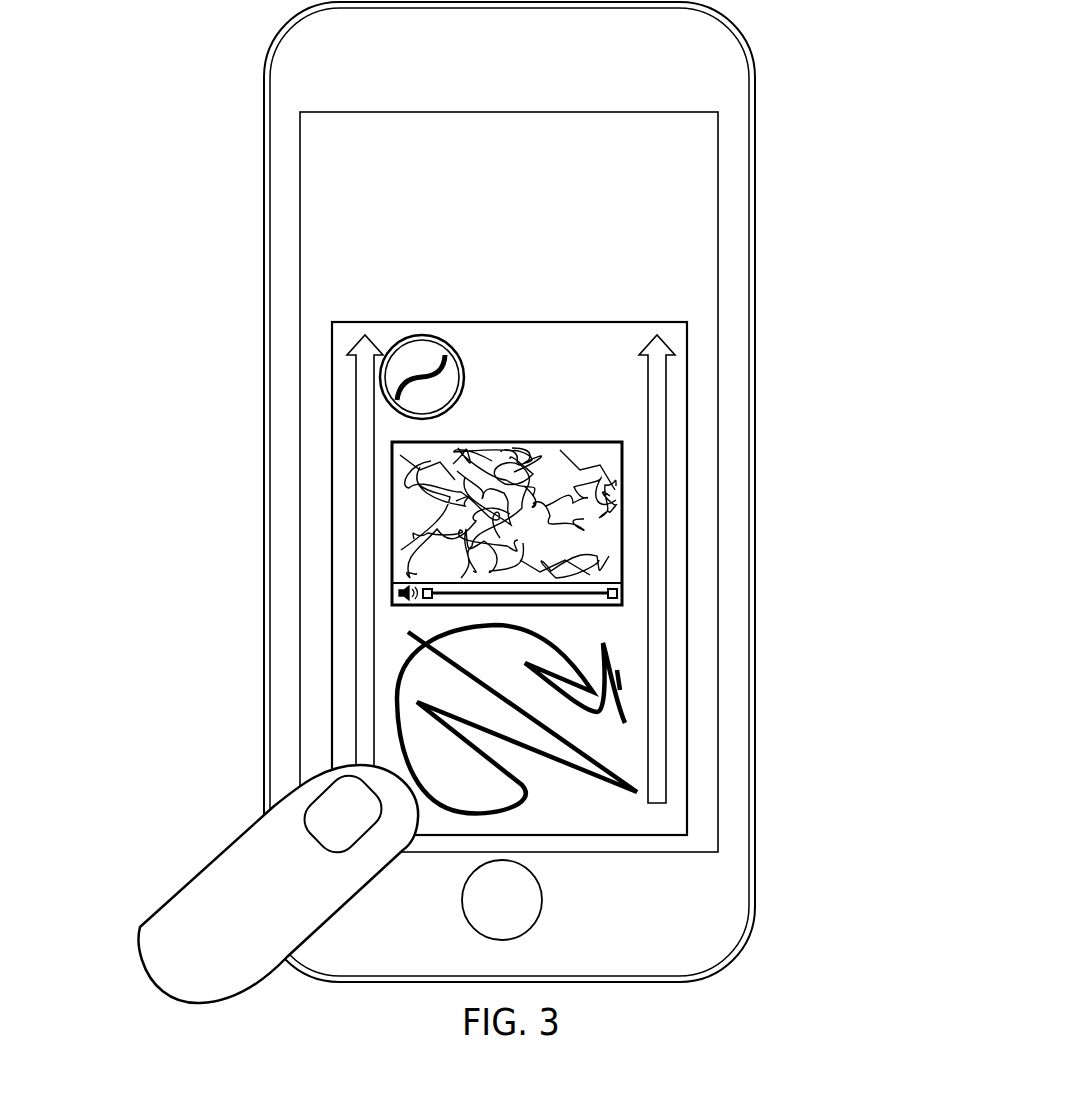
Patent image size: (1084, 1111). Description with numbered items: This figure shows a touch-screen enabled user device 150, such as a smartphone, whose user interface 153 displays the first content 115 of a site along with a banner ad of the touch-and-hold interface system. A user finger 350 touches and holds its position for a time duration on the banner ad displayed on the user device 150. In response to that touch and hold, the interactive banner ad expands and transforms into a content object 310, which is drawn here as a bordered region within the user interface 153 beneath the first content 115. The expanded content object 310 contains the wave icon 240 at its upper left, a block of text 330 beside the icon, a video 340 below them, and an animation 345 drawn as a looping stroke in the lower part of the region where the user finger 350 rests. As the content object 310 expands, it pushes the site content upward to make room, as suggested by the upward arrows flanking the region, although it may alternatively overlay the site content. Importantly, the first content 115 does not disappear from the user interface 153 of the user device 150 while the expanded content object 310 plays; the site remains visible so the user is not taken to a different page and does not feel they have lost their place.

The first content 115 is at (340, 296).
The user device 150 is at (752, 247).
The user interface 153 is at (722, 346).
The wave icon 240 is at (397, 368).
The content object 310 is at (562, 816).
The text 330 is at (623, 418).
The video 340 is at (607, 545).
The animation 345 is at (410, 658).
The user finger 350 is at (187, 867).